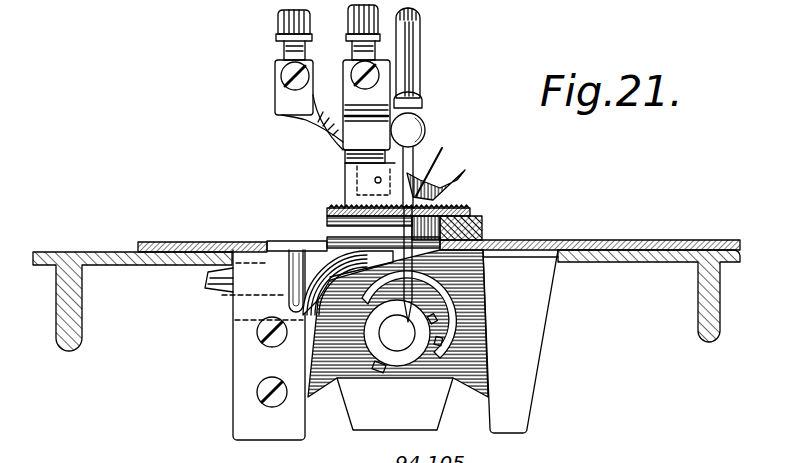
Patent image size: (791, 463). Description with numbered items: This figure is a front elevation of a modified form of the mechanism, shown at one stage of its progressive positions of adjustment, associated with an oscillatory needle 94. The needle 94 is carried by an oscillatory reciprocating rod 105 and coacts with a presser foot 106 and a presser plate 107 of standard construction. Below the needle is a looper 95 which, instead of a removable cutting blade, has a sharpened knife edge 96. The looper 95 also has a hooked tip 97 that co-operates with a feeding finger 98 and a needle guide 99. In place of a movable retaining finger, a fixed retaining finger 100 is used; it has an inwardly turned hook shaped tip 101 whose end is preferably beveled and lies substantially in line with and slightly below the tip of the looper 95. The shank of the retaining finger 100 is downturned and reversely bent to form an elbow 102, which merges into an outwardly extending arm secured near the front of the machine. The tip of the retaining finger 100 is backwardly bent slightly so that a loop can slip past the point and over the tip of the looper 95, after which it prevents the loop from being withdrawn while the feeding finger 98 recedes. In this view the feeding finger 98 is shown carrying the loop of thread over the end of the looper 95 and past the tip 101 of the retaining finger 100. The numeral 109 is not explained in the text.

The oscillatory needle 94 is at (433, 165).
The looper 95 is at (312, 246).
The sharpened knife edge 96 is at (348, 267).
The hooked tip 97 is at (405, 263).
The feeding finger 98 is at (477, 218).
The needle guide 99 is at (413, 303).
The fixed retaining finger 100 is at (333, 309).
The hook shaped tip 101 is at (480, 242).
The elbow 102 is at (292, 277).
The oscillatory reciprocating rod 105 is at (413, 60).
The presser foot 106 is at (358, 183).
The presser plate 107 is at (325, 133).
The thumb nut 109 is at (282, 22).